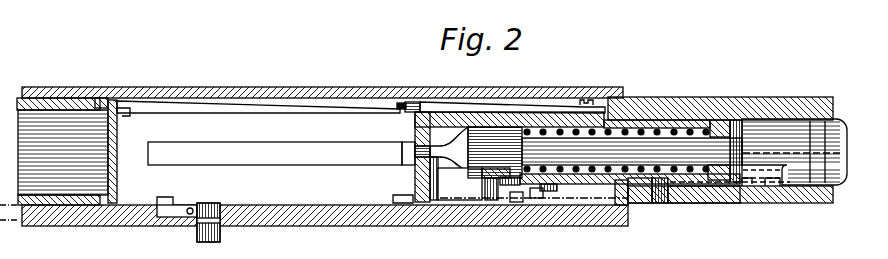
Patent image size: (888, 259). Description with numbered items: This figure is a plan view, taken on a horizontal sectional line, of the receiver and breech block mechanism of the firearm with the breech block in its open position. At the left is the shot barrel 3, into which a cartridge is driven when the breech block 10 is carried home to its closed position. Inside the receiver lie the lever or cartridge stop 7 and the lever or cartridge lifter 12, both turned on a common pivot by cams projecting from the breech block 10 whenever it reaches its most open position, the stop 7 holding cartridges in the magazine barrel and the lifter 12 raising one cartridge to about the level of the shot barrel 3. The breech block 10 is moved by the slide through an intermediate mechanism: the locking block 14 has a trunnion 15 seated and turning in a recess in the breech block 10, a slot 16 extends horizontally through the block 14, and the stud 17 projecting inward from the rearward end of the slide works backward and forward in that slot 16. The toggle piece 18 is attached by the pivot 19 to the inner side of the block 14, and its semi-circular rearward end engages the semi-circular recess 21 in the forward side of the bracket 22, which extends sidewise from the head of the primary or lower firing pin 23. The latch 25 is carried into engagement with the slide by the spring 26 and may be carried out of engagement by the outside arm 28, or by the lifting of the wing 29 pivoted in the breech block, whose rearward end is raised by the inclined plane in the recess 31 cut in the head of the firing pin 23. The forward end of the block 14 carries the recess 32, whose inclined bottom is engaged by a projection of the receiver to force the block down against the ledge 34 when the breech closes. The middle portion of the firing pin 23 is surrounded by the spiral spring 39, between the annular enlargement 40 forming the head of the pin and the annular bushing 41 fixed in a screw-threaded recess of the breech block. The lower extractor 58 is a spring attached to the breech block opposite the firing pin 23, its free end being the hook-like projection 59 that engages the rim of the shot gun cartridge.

The shot barrel 3 is at (56, 151).
The lever or cartridge stop 7 is at (240, 104).
The breech block 10 is at (818, 203).
The lever or cartridge lifter 12 is at (281, 153).
The locking block 14 is at (630, 204).
The trunnion 15 is at (622, 205).
The slot 16 is at (536, 198).
The stud 17 is at (552, 191).
The toggle piece 18 is at (690, 186).
The pivot 19 is at (667, 204).
The semi-circular recess 21 is at (747, 186).
The bracket 22 is at (772, 186).
The primary or lower firing pin 23 is at (805, 152).
The latch 25 is at (163, 204).
The spring 26 is at (182, 214).
The arm 28 is at (212, 242).
The wing 29 is at (470, 168).
The recess 31 is at (505, 186).
The recess 32 is at (491, 201).
The ledge 34 is at (407, 204).
The spiral spring 39 is at (652, 128).
The annular enlargement 40 is at (493, 142).
The annular bushing 41 is at (722, 121).
The lower extractor 58 is at (420, 109).
The hook-like projection 59 is at (399, 106).